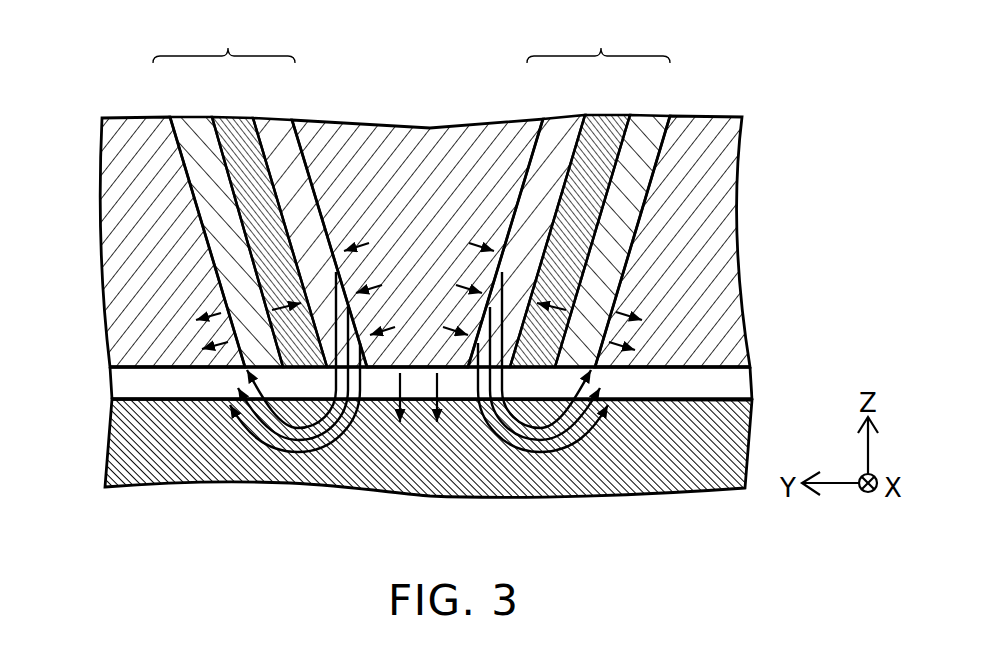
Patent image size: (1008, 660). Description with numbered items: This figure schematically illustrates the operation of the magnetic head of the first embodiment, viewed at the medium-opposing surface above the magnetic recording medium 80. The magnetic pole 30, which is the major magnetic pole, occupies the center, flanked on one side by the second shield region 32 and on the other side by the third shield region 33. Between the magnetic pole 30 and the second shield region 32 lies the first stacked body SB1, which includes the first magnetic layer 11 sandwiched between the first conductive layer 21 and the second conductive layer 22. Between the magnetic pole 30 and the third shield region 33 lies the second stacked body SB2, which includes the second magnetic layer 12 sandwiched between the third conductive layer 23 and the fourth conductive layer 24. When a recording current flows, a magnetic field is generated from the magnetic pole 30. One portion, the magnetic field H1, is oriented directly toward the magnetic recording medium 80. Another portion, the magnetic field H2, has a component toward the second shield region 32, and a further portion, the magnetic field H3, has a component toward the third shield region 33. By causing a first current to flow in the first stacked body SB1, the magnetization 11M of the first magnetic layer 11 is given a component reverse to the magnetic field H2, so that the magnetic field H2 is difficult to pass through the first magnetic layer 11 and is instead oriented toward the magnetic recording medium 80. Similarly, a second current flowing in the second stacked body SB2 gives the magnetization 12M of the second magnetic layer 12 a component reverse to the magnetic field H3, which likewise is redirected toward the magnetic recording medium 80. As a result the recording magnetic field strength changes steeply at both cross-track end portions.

The first magnetic layer 11 is at (607, 128).
The second magnetic layer 12 is at (233, 132).
The first conductive layer 21 is at (567, 130).
The second conductive layer 22 is at (645, 132).
The third conductive layer 23 is at (272, 132).
The fourth conductive layer 24 is at (195, 132).
The magnetic pole 30 is at (408, 133).
The second shield region 32 is at (713, 132).
The third shield region 33 is at (127, 137).
The magnetic recording medium 80 is at (647, 460).
The magnetization of the first magnetic layer 11M is at (566, 310).
The magnetization of the second magnetic layer 12M is at (272, 310).
The magnetic field H1 is at (424, 412).
The magnetic field H2 is at (535, 426).
The magnetic field H3 is at (302, 426).
The first stacked body SB1 is at (598, 39).
The second stacked body SB2 is at (224, 39).